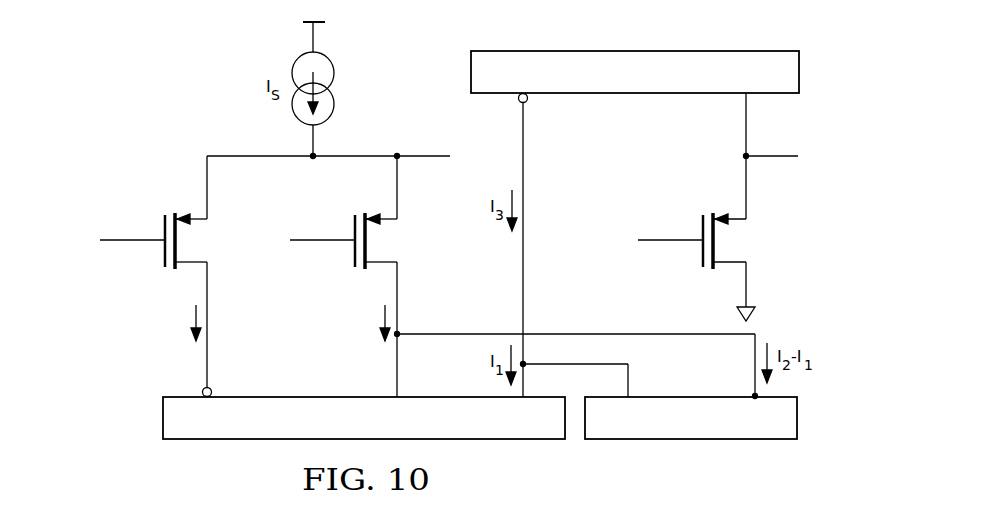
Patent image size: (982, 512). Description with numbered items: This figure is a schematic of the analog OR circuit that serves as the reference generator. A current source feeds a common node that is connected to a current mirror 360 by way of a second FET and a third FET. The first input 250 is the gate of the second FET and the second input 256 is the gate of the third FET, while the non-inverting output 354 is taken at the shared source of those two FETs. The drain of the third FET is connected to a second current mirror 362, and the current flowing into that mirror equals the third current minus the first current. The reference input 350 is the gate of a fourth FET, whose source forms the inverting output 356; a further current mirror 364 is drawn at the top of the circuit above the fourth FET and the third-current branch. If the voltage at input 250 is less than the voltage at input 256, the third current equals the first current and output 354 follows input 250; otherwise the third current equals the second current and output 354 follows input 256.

The first input 250 is at (135, 240).
The second input 256 is at (325, 240).
The reference input 350 is at (672, 240).
The non-inverting output 354 is at (428, 153).
The inverting output 356 is at (777, 153).
The current mirror 360 is at (163, 418).
The current mirror 362 is at (797, 418).
The current mirror 364 is at (637, 50).